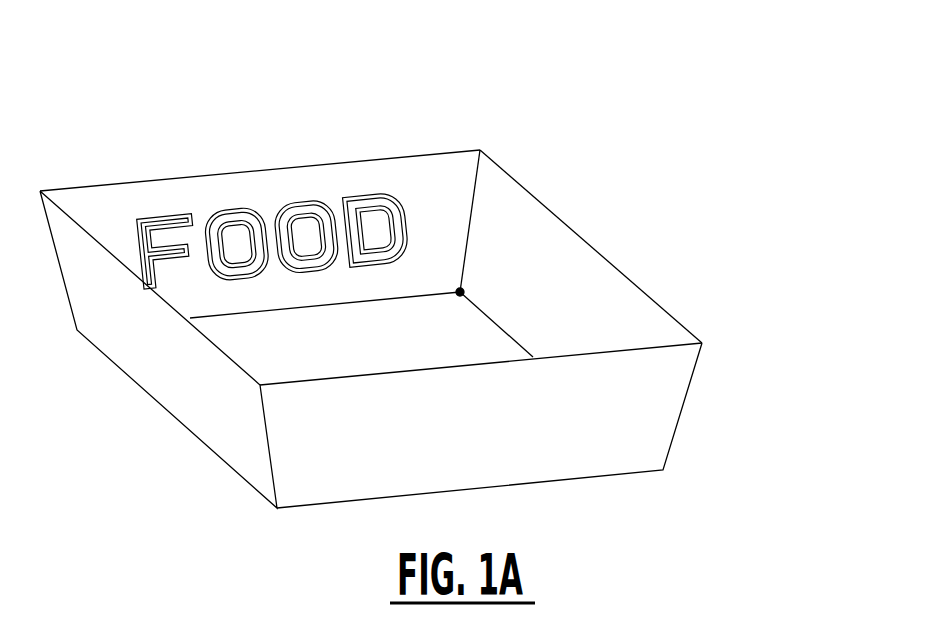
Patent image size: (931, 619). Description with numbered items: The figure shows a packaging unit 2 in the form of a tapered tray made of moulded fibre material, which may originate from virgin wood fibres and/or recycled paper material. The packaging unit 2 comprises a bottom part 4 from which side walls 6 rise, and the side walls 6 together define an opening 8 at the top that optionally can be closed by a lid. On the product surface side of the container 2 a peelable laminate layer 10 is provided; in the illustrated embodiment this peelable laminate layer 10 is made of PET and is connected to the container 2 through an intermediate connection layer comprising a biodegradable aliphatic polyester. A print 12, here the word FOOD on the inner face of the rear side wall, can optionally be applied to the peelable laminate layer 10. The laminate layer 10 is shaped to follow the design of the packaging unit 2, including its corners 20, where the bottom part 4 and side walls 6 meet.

The packaging unit 2 is at (723, 128).
The bottom part 4 is at (312, 365).
The side walls 6 is at (180, 378).
The opening 8 is at (537, 167).
The peelable laminate layer 10 is at (594, 302).
The print 12 is at (277, 185).
The corners 20 is at (460, 292).